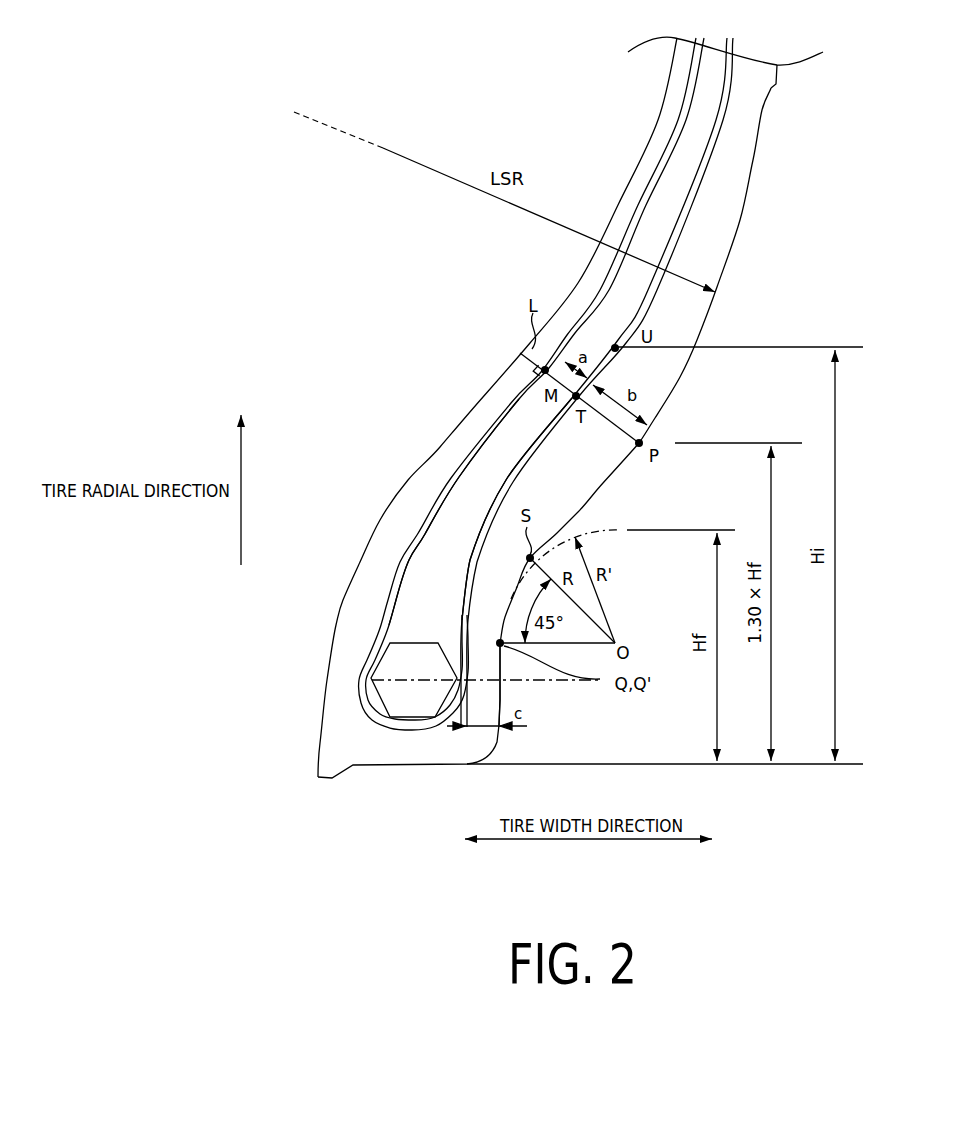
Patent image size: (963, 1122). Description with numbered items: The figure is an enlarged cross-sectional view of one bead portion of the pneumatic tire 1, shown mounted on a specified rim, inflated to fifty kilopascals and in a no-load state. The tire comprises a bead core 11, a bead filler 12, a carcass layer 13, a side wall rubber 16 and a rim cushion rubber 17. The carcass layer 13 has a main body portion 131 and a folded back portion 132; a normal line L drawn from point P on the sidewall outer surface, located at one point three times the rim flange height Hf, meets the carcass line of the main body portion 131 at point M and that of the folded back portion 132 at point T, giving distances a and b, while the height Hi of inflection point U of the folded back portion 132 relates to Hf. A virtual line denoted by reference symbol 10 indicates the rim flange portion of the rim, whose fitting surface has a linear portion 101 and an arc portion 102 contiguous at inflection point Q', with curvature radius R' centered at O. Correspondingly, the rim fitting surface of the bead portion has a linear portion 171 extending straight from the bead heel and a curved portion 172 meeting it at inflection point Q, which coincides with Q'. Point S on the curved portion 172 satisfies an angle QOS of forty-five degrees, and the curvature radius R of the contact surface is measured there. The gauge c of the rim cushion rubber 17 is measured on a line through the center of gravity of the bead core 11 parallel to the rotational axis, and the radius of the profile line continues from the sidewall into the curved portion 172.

The pneumatic tire 1 is at (543, 86).
The rim flange portion 10 is at (591, 558).
The linear portion 101 is at (591, 691).
The arc portion 102 is at (619, 533).
The bead core 11 is at (366, 680).
The bead filler 12 is at (433, 572).
The carcass layer 13 is at (367, 403).
The main body portion 131 is at (436, 502).
The folded back portion 132 is at (487, 513).
The side wall rubber 16 is at (753, 160).
The rim cushion rubber 17 is at (425, 737).
The linear portion 171 is at (501, 695).
The curved portion 172 is at (568, 530).